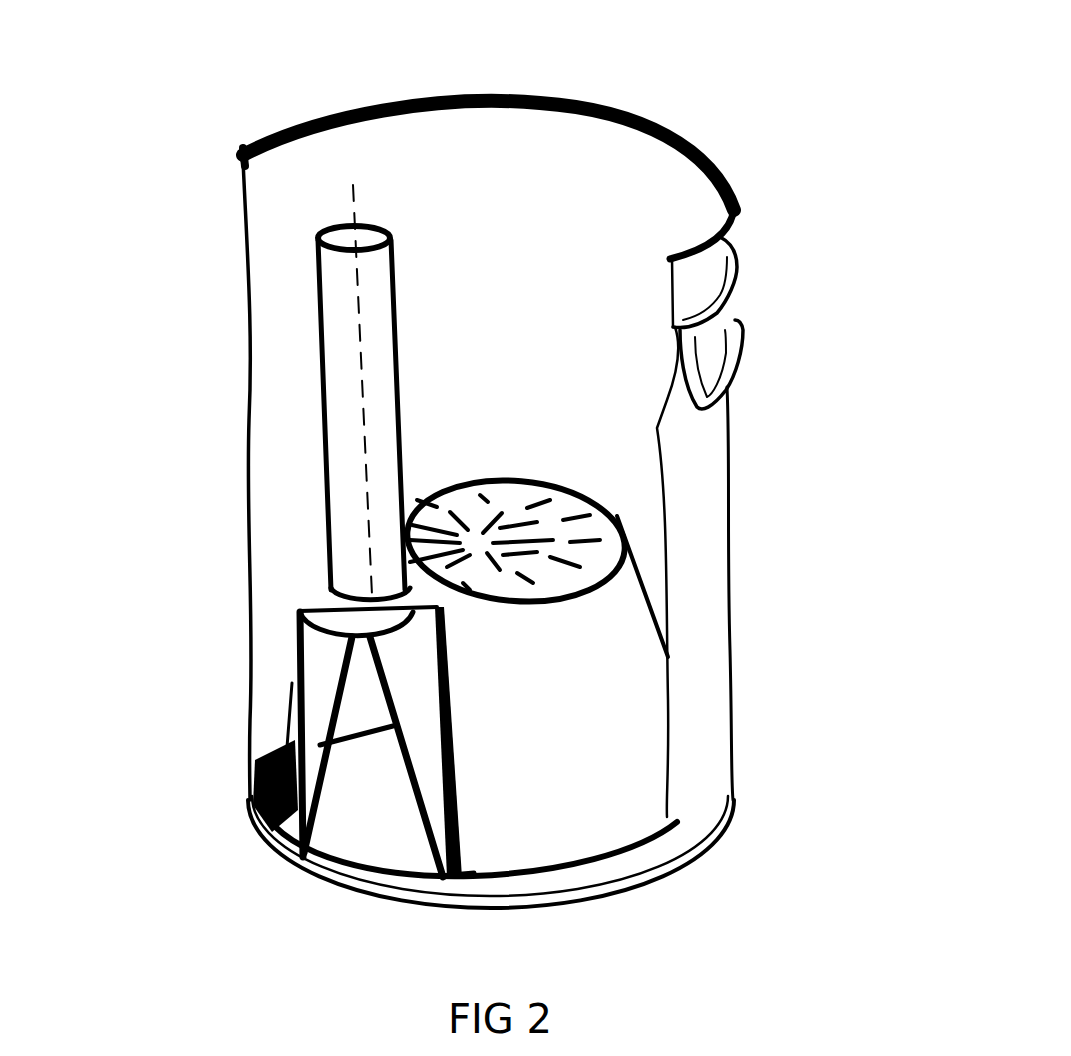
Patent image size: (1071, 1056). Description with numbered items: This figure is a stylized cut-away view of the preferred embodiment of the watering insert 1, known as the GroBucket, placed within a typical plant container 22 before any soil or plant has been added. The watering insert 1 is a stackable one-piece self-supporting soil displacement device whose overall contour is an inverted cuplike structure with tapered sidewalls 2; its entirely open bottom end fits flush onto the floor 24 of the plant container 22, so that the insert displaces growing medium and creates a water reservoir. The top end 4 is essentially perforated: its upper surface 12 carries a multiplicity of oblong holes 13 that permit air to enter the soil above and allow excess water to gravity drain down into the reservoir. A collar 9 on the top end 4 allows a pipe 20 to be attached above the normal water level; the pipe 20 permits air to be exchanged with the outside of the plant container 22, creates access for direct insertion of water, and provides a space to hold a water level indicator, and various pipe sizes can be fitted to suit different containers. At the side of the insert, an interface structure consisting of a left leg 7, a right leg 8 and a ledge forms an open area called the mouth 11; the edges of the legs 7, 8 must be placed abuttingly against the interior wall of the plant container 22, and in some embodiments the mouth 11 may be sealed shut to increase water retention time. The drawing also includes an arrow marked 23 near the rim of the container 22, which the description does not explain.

The watering insert 1 is at (598, 464).
The tapered sidewalls 2 is at (598, 464).
The top end 4 is at (659, 504).
The left leg 7 is at (323, 667).
The right leg 8 is at (425, 713).
The collar 9 is at (308, 604).
The mouth 11 is at (364, 765).
The upper surface 12 is at (659, 504).
The oblong holes 13 is at (453, 513).
The pipe 20 is at (322, 470).
The plant container 22 is at (650, 113).
The rotation direction arrow 23 is at (347, 151).
The floor 24 is at (377, 820).